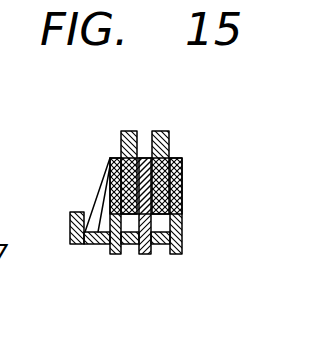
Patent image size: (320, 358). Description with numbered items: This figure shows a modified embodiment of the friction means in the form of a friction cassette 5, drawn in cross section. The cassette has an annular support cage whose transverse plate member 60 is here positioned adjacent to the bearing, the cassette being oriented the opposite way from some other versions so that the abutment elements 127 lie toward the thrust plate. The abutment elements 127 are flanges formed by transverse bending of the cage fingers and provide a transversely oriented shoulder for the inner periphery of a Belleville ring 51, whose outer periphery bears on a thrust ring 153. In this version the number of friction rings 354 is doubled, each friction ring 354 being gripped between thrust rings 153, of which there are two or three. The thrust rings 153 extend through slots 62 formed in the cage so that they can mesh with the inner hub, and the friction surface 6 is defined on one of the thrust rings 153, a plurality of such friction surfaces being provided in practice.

The friction cassette 5 is at (137, 198).
The friction surface 6 is at (182, 188).
The Belleville ring 51 is at (101, 181).
The plate member 60 is at (182, 170).
The slots 62 is at (182, 230).
The abutment element 127 is at (69, 231).
The thrust rings 153 is at (177, 254).
The friction rings 354 is at (162, 131).